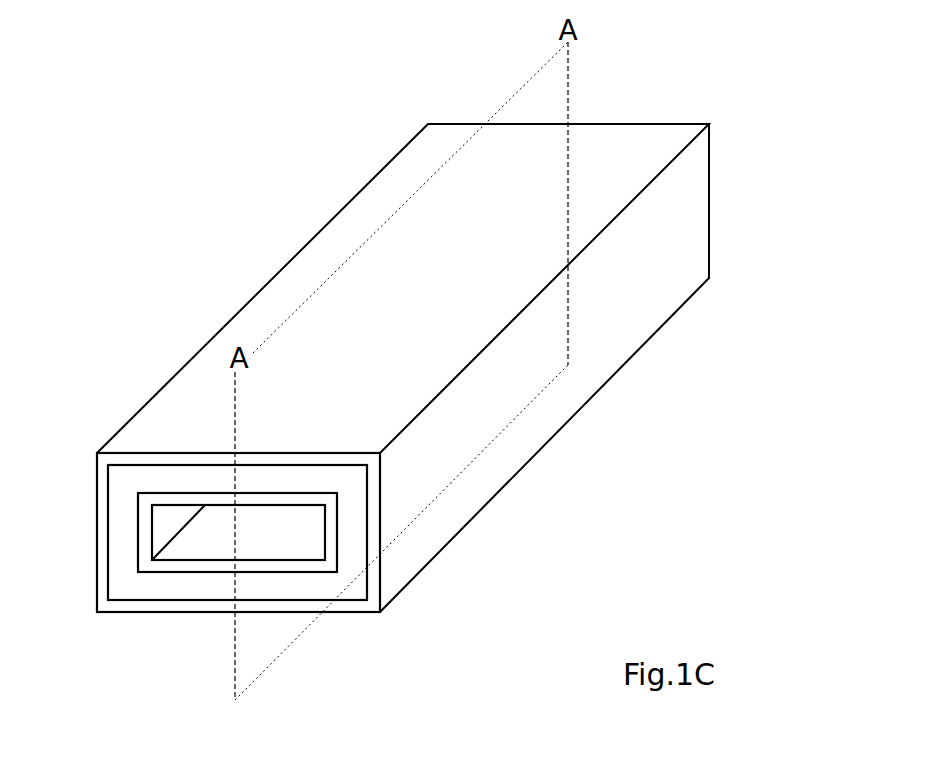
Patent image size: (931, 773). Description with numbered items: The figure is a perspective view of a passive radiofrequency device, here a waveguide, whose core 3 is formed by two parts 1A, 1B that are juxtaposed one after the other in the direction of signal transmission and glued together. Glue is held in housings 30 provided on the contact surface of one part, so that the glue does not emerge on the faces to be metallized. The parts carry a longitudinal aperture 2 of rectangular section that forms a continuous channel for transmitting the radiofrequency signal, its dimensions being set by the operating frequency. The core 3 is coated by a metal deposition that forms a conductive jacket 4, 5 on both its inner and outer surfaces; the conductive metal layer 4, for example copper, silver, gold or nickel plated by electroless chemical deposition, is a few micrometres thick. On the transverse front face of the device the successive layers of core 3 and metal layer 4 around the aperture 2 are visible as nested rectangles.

The first part 1A is at (463, 480).
The second part 1B is at (628, 311).
The longitudinal aperture 2 is at (272, 553).
The core 3 is at (155, 585).
The conductive metal layer 4 is at (210, 567).
The conductive jacket 5 is at (378, 603).
The housing 30 is at (120, 510).